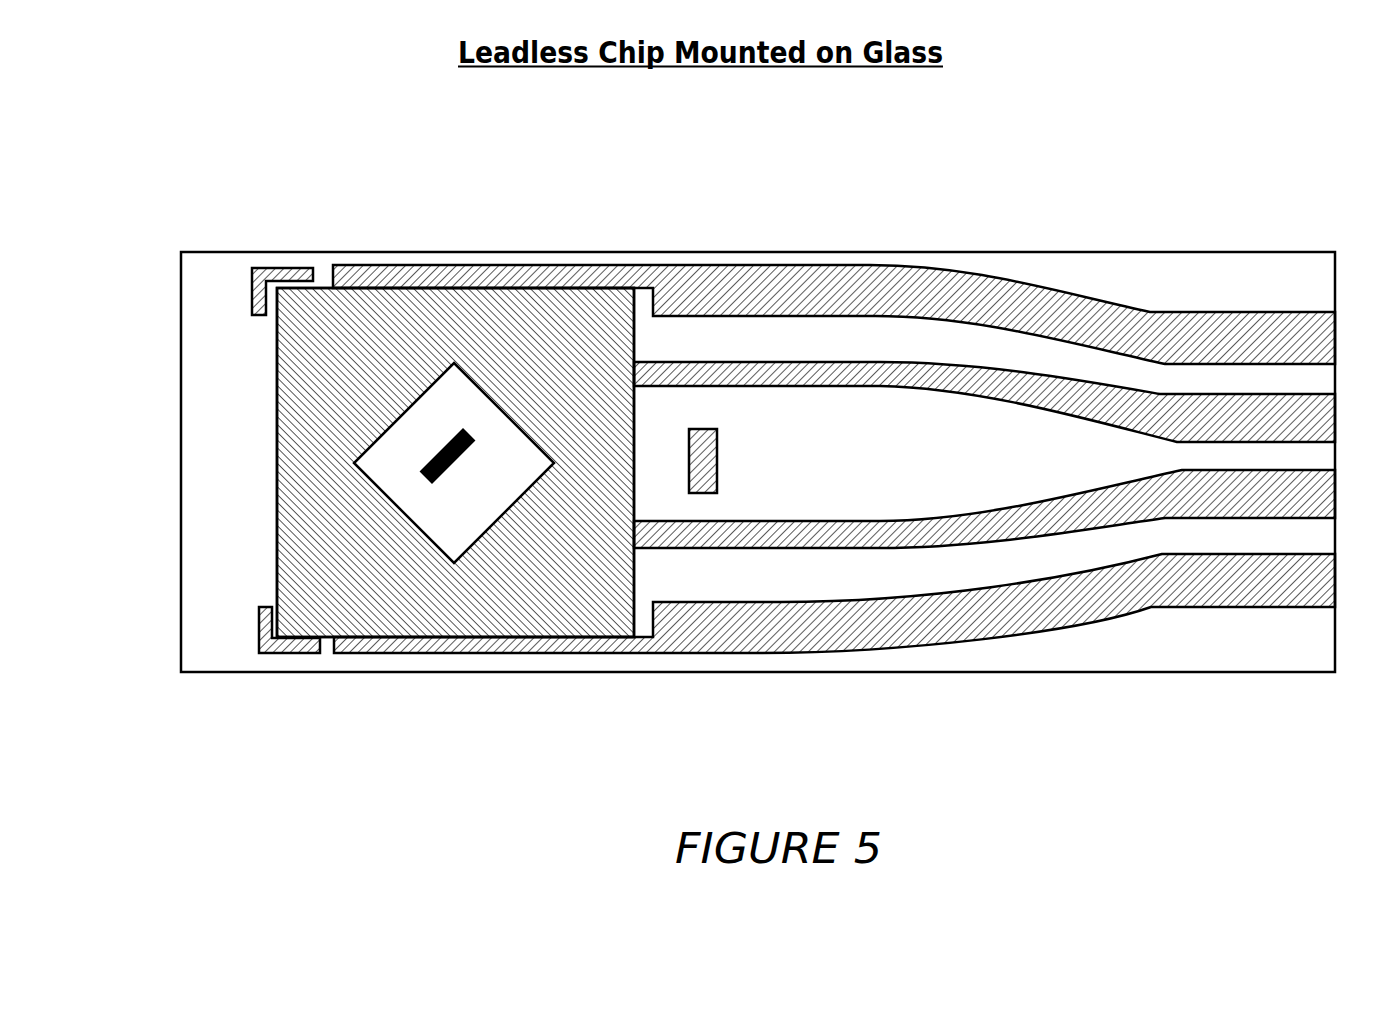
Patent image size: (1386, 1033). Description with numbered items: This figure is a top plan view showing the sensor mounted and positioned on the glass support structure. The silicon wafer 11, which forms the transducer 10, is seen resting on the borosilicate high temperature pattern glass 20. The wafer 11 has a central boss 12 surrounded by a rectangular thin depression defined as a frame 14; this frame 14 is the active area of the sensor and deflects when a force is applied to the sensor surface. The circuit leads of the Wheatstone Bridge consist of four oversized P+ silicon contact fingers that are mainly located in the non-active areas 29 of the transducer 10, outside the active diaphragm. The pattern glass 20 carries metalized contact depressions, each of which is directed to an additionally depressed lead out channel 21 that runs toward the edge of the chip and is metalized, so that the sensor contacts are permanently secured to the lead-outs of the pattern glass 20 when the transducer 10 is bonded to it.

The transducer 10 is at (517, 784).
The wafer 11 is at (314, 320).
The central boss 12 is at (420, 475).
The frame 14 is at (466, 533).
The high temperature pattern glass 20 is at (834, 411).
The lead out channels 21 is at (1110, 318).
The non-active areas 29 is at (459, 302).